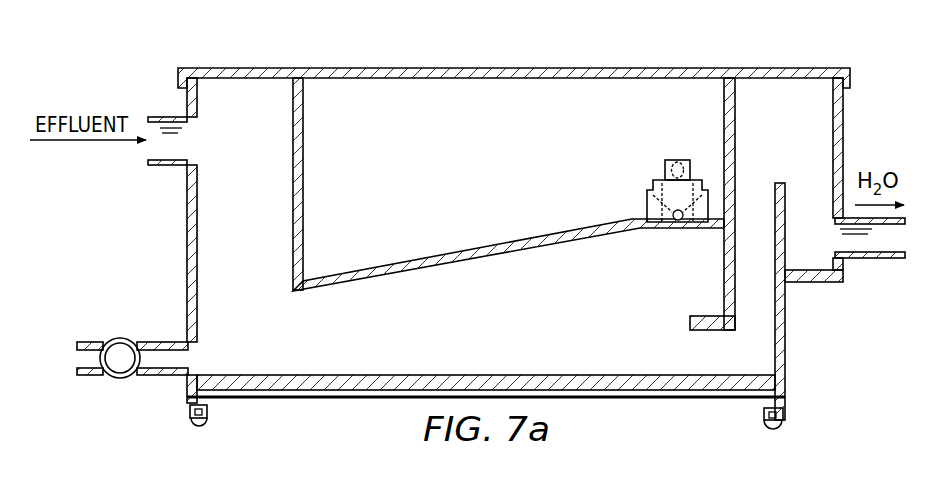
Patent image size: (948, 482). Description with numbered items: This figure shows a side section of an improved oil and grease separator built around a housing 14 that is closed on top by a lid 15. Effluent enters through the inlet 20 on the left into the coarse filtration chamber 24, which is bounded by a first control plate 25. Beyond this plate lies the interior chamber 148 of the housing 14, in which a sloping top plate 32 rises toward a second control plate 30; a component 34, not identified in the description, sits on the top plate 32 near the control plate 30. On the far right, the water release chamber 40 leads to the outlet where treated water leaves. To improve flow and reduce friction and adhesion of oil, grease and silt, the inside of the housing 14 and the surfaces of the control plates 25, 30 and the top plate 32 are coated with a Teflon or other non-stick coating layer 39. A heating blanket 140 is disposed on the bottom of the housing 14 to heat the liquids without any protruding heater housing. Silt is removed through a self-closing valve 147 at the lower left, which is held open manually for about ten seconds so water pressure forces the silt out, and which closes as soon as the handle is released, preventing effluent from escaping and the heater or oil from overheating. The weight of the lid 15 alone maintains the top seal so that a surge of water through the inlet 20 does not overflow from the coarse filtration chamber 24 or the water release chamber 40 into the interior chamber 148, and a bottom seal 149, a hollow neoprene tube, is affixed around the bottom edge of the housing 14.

The housing 14 is at (186, 238).
The lid 15 is at (490, 67).
The inlet 20 is at (868, 260).
The coarse filtration chamber 24 is at (258, 207).
The control plate 25 is at (304, 165).
The control plate 30 is at (721, 280).
The top plate 32 is at (452, 250).
The float valve assembly 34 is at (665, 168).
The non-stick coating layer 39 is at (483, 257).
The water release chamber 40 is at (797, 160).
The heating blanket 140 is at (785, 397).
The self-closing valve 147 is at (122, 338).
The interior chamber 148 is at (512, 169).
The bottom seal 149 is at (181, 429).